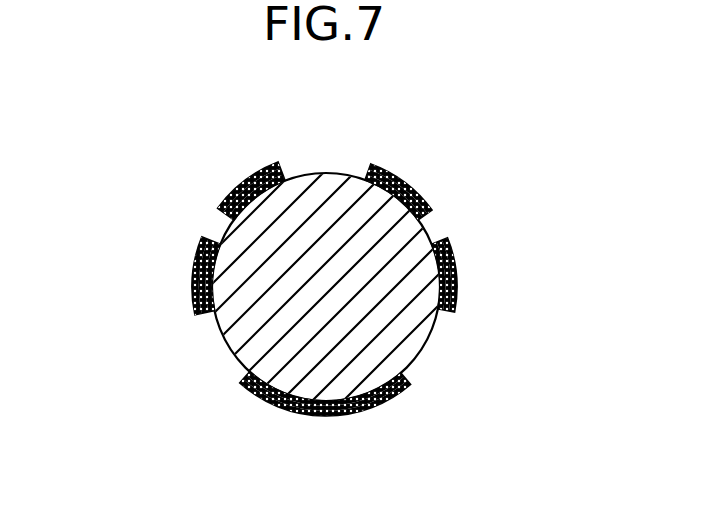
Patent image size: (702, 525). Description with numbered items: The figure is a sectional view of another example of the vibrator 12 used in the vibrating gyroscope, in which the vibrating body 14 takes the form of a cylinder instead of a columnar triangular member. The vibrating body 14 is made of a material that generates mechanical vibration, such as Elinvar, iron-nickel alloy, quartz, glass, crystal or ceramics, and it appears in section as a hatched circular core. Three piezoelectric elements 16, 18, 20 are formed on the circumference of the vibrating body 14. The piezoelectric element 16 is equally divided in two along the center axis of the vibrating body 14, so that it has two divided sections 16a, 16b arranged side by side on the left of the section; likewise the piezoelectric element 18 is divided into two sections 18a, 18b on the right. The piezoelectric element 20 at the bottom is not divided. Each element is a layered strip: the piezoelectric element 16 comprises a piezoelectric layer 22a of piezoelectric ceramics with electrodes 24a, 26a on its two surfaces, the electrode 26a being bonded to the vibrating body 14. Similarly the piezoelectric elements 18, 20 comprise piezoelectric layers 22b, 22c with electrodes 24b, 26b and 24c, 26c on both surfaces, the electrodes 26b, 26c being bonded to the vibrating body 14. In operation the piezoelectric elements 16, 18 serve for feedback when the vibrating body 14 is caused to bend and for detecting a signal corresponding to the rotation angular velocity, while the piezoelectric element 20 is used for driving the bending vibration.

The vibrator 12 is at (80, 78).
The vibrating body 14 is at (421, 354).
The piezoelectric element 16 is at (126, 193).
The divided section 16a is at (205, 201).
The divided section 16b is at (190, 248).
The piezoelectric element 18 is at (524, 200).
The divided section 18a is at (440, 210).
The divided section 18b is at (462, 253).
The piezoelectric element 20 is at (399, 409).
The piezoelectric layer 22a is at (264, 171).
The piezoelectric layer 22b is at (384, 169).
The piezoelectric layer 22c is at (278, 406).
The electrode 24a is at (236, 189).
The electrode 24b is at (419, 190).
The electrode 24c is at (357, 416).
The electrode 26a is at (296, 174).
The electrode 26b is at (361, 176).
The electrode 26c is at (245, 375).